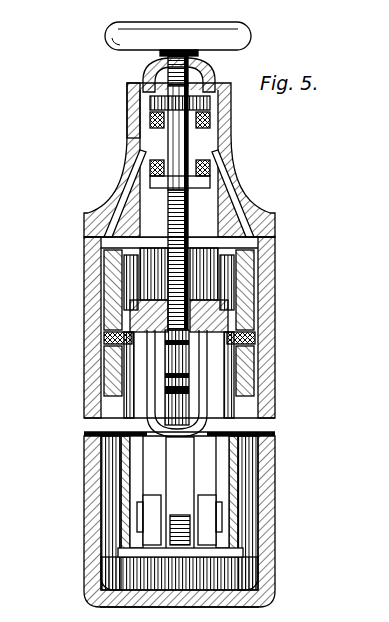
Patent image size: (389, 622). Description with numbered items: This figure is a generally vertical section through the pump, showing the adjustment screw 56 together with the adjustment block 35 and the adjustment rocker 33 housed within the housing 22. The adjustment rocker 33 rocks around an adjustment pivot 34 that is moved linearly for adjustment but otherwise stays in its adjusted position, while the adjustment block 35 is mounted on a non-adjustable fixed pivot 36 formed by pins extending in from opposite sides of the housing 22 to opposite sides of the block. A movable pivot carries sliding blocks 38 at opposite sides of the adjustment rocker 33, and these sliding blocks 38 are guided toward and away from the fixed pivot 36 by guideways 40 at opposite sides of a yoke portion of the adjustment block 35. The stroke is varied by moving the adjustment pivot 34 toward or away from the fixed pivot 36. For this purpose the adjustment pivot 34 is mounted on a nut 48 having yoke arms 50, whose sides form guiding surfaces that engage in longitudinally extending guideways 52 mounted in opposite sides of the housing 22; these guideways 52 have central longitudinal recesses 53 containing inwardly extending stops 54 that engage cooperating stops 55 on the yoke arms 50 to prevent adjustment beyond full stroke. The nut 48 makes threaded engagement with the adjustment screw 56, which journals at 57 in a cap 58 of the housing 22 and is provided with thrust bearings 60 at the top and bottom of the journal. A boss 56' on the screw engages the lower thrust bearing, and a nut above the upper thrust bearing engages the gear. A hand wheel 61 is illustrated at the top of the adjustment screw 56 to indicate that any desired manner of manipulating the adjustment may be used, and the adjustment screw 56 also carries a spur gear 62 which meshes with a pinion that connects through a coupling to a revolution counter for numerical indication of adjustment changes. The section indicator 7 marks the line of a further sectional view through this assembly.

The hand wheel 61 is at (251, 38).
The spur gear 62 is at (128, 102).
The journal 57 is at (212, 152).
The thrust bearings 60 is at (212, 128).
The cap 58 is at (212, 162).
The boss 56' is at (154, 193).
The adjustment screw 56 is at (198, 193).
The guideways 52 is at (208, 262).
The nut 48 is at (270, 265).
The central longitudinal recesses 53 is at (110, 283).
The cooperating stops 55 is at (128, 312).
The inwardly extending stops 54 is at (126, 336).
The yoke arms 50 is at (130, 375).
The adjustment pivot 34 is at (262, 380).
The fixed pivot 36 is at (95, 428).
The adjustment rocker 33 is at (190, 462).
The adjustment block 35 is at (117, 486).
The sliding blocks 38 is at (148, 520).
The guideways 40 is at (133, 560).
The housing 22 is at (272, 596).
The section line 7- 7 is at (82, 371).